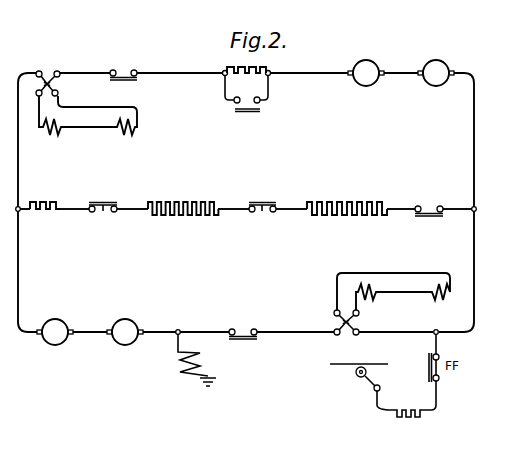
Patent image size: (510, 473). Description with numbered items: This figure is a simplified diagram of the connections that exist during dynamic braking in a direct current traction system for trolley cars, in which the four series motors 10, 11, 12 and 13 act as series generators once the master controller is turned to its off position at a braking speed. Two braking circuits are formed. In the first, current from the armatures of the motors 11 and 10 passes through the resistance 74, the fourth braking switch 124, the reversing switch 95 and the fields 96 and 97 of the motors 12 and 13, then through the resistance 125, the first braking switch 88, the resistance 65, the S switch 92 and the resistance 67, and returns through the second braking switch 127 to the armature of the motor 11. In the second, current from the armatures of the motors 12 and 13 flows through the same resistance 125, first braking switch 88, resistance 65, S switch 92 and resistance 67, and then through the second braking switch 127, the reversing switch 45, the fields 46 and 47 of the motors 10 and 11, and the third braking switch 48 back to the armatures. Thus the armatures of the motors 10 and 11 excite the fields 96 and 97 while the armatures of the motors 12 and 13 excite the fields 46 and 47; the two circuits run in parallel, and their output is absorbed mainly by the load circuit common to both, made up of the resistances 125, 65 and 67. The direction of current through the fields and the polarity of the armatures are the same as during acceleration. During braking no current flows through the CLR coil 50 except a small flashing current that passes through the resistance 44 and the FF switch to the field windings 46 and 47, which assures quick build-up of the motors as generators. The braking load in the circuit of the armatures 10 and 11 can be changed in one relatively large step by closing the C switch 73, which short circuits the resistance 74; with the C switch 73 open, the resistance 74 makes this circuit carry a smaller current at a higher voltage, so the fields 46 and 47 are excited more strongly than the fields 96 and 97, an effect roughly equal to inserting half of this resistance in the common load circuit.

The reversing switch 95 is at (52, 83).
The field 96 is at (48, 136).
The field 97 is at (127, 134).
The B4 switch 124 is at (137, 81).
The resistance 74 is at (226, 69).
The C switch 73 is at (259, 114).
The motor 10 is at (362, 59).
The motor 11 is at (432, 59).
The resistance 125 is at (35, 212).
The B1 switch 88 is at (103, 207).
The resistance 65 is at (195, 204).
The S switch 92 is at (262, 210).
The resistance 67 is at (350, 203).
The B2 switch 127 is at (424, 217).
The motor 12 is at (57, 318).
The motor 13 is at (127, 318).
The CLR coil 50 is at (203, 364).
The B3 switch 48 is at (248, 341).
The reversing switch 45 is at (343, 320).
The field 47 is at (370, 300).
The field 46 is at (446, 303).
The resistance 44 is at (402, 404).